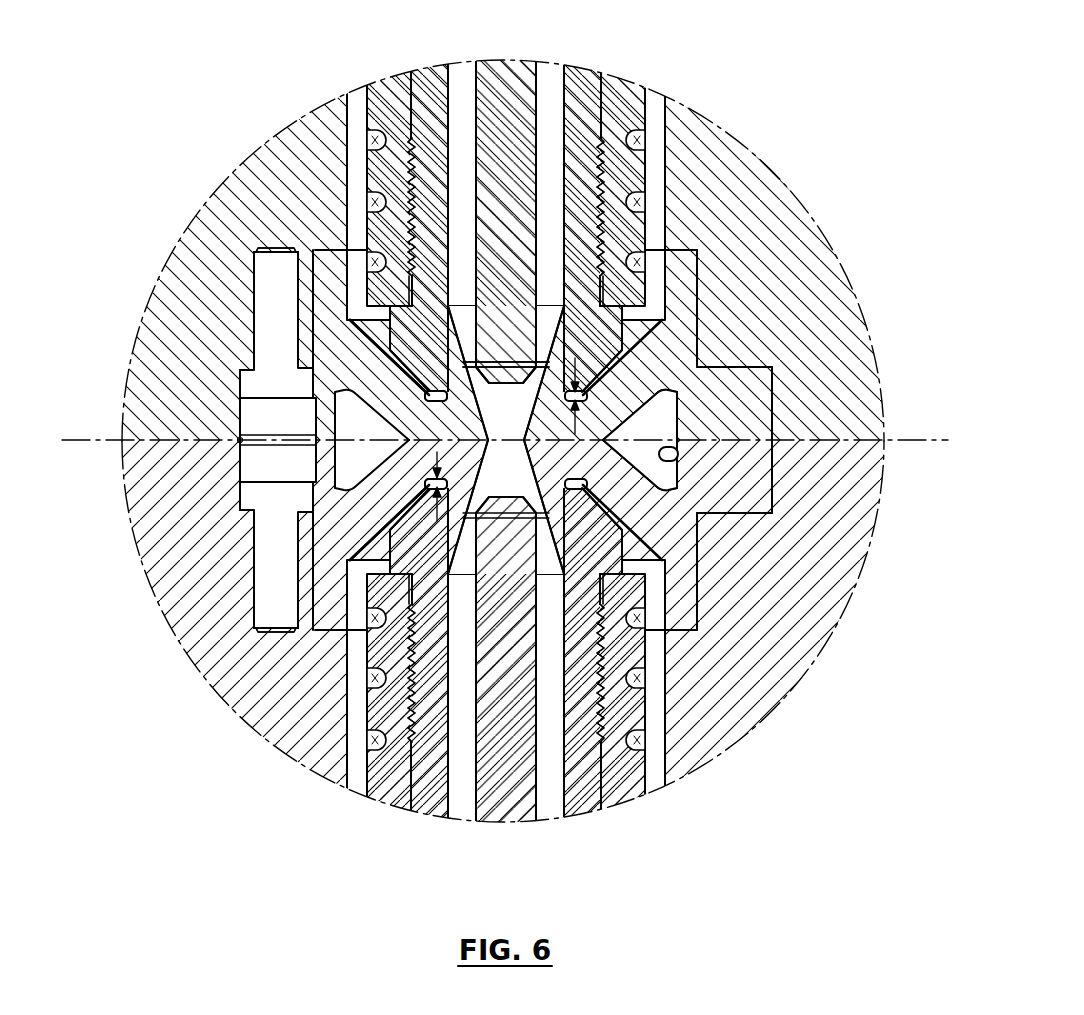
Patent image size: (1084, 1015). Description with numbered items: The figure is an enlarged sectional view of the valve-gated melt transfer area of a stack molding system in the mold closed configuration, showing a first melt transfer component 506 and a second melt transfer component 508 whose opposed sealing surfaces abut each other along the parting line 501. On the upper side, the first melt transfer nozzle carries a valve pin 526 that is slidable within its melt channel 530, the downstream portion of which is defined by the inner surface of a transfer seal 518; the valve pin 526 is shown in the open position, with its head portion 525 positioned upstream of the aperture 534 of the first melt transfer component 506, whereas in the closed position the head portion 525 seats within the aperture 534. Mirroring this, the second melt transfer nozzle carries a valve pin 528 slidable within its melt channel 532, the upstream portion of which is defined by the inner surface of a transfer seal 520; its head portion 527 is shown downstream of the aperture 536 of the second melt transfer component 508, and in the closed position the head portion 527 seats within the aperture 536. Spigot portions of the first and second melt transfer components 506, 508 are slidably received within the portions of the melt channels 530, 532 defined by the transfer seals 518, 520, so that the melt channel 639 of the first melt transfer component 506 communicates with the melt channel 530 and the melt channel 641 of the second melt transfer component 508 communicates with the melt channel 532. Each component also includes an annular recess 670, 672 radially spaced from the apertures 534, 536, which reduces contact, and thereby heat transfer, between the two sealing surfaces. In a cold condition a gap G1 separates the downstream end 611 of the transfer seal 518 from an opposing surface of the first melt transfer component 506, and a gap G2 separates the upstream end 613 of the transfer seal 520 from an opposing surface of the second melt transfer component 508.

The parting line 501 is at (76, 455).
The first melt transfer component 506 is at (770, 387).
The second melt transfer component 508 is at (772, 500).
The transfer seal 518 is at (428, 128).
The transfer seal 520 is at (425, 695).
The head portion 525 is at (538, 342).
The valve pin 526 is at (538, 137).
The head portion 527 is at (628, 588).
The valve pin 528 is at (538, 745).
The melt channel 530 is at (555, 208).
The melt channel 532 is at (455, 765).
The aperture 534 is at (665, 432).
The aperture 536 is at (527, 438).
The downstream end 611 is at (400, 363).
The upstream end 613 is at (400, 517).
The melt channel 639 is at (472, 383).
The melt channel 641 is at (472, 497).
The annular recess 670 is at (313, 425).
The annular recess 672 is at (678, 457).
The gap G1 is at (580, 382).
The gap G2 is at (425, 467).